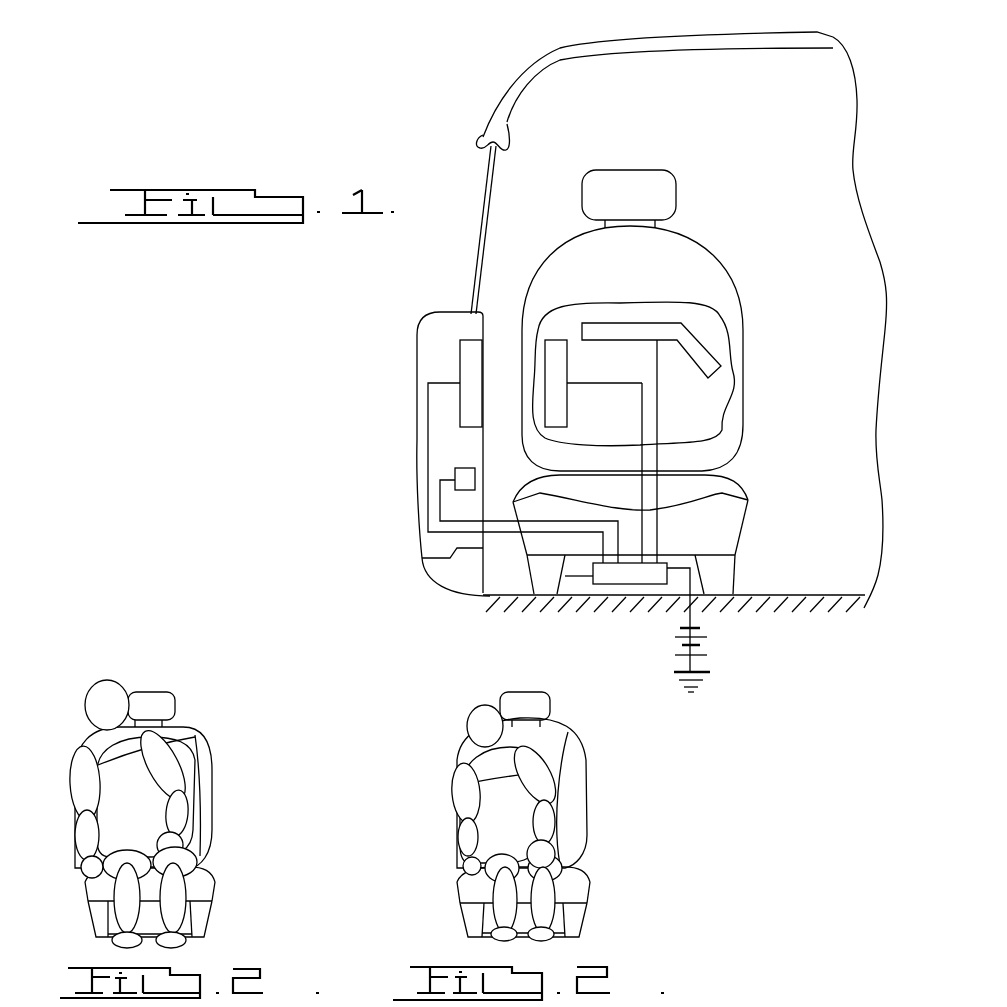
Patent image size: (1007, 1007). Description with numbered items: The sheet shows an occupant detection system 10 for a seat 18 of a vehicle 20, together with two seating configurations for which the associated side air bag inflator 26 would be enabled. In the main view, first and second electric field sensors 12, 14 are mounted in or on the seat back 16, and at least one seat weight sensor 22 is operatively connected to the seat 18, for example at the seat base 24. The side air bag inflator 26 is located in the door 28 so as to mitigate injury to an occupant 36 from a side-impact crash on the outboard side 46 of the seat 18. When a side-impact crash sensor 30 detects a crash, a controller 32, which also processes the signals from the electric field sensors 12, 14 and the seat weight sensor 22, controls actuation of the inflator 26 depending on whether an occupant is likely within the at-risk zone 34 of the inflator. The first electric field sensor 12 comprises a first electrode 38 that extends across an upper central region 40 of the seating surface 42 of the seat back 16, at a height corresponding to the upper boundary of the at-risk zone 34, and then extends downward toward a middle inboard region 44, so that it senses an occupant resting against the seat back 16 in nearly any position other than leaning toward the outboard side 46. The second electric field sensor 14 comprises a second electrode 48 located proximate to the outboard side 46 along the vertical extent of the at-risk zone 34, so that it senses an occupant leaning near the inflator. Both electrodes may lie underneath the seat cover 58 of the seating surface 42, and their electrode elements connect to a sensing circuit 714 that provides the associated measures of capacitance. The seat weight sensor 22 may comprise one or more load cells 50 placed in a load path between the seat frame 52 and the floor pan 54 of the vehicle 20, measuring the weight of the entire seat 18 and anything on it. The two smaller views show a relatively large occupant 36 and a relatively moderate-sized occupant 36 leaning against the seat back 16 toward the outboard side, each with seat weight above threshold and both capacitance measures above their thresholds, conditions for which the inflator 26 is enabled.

In FIG. 1, the occupant detection system 10 is at (734, 243).
In FIG. 2A, the occupant detection system 10 is at (93, 669).
In FIG. 2B, the occupant detection system 10 is at (448, 727).
In FIG. 1, the first electric field sensor 12 is at (692, 323).
In FIG. 1, the second electric field sensor 14 is at (575, 378).
In FIG. 1, the seat back 16 is at (736, 272).
In FIG. 2A, the seat back 16 is at (205, 740).
In FIG. 2B, the seat back 16 is at (587, 756).
In FIG. 1, the seat 18 is at (749, 459).
In FIG. 2A, the seat 18 is at (220, 875).
In FIG. 2B, the seat 18 is at (604, 873).
In FIG. 1, the vehicle 20 is at (619, 38).
In FIG. 1, the seat weight sensor 22 is at (626, 600).
In FIG. 1, the seat base 24 is at (748, 505).
In FIG. 2A, the seat base 24 is at (215, 893).
In FIG. 2B, the seat base 24 is at (587, 895).
In FIG. 1, the side air bag inflator 26 is at (468, 364).
In FIG. 1, the door 28 is at (425, 316).
In FIG. 1, the side-impact crash sensor 30 is at (460, 477).
In FIG. 1, the controller 32 is at (626, 585).
In FIG. 1, the at-risk zone 34 is at (504, 324).
In FIG. 2A, the occupant 36 is at (100, 742).
In FIG. 2B, the occupant 36 is at (478, 760).
In FIG. 1, the first electrode 38 is at (721, 355).
In FIG. 1, the upper central region 40 is at (663, 318).
In FIG. 1, the seating surface 42 is at (628, 274).
In FIG. 1, the middle inboard region 44 is at (726, 391).
In FIG. 1, the outboard side 46 is at (536, 242).
In FIG. 1, the second electrode 48 is at (567, 402).
In FIG. 1, the load cell 50 is at (734, 574).
In FIG. 1, the seat frame 52 is at (750, 547).
In FIG. 1, the floor pan 54 is at (864, 598).
In FIG. 1, the seat cover 58 is at (705, 464).
In FIG. 1, the sensing circuit 714 is at (598, 592).